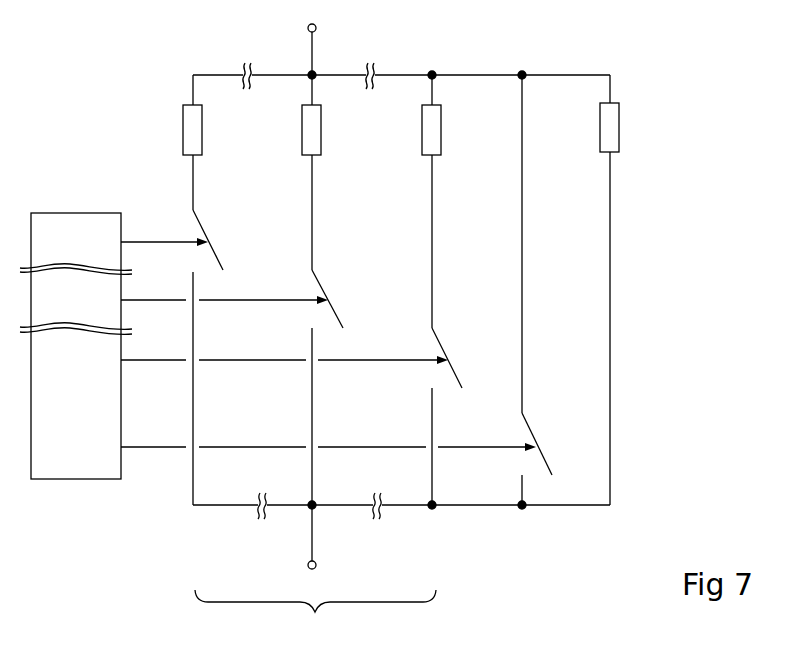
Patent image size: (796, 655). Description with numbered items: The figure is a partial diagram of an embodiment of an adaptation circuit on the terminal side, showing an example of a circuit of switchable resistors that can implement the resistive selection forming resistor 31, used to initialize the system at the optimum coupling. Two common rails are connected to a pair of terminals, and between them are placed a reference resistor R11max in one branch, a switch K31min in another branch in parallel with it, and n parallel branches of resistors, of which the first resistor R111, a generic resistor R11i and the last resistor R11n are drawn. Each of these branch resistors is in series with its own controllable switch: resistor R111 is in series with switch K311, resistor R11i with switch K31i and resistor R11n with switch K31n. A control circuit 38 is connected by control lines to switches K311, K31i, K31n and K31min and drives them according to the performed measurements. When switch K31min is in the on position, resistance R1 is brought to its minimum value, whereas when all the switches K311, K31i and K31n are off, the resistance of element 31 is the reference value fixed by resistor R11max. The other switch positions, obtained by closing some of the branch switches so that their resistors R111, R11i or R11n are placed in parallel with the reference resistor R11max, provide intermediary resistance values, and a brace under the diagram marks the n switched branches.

The resistor 31 is at (659, 93).
The circuit 38 is at (73, 480).
The resistor R1_11 R111 is at (164, 157).
The resistor R1_1i R11i is at (285, 187).
The resistor R1_1n R11n is at (401, 216).
The resistor R1_1ref R11max is at (653, 130).
The switch K31_1 K311 is at (218, 250).
The switch K31_i K31i is at (337, 316).
The switch K31_n K31n is at (456, 372).
The switch K31min is at (535, 436).